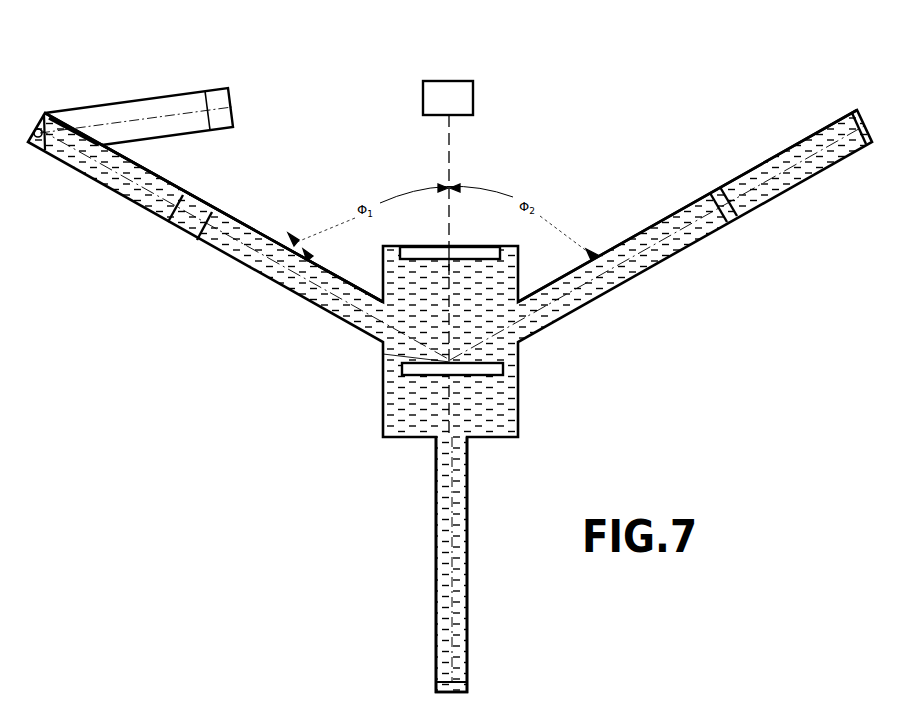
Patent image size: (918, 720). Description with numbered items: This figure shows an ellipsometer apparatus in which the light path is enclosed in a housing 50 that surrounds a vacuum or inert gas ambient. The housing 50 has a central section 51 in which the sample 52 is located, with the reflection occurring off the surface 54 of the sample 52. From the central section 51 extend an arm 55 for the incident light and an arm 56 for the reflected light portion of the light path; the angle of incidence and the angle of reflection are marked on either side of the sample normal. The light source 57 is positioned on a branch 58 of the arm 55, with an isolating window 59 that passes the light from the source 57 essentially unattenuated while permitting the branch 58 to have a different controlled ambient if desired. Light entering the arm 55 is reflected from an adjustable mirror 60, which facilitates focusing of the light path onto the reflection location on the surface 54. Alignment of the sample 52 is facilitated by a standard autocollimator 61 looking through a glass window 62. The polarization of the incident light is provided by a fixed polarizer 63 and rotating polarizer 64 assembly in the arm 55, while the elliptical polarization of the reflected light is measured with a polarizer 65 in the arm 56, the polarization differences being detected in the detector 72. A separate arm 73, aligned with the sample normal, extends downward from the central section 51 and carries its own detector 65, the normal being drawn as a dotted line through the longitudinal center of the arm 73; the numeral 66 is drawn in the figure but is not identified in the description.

The housing 50 is at (327, 204).
The central section 51 is at (374, 335).
The sample 52 is at (493, 377).
The surface 54 is at (383, 354).
The arm 55 is at (168, 183).
The arm 56 is at (689, 204).
The light source 57 is at (222, 98).
The branch 58 is at (146, 96).
The isolating window 59 is at (62, 113).
The adjustable mirror 60 is at (38, 140).
The autocollimator 61 is at (456, 80).
The glass window 62 is at (460, 260).
The fixed polarizer 63 is at (167, 227).
The rotating polarizer 64 is at (200, 242).
The polarizer 65 is at (728, 224).
The optical axis 66 is at (436, 296).
The detector 72 is at (857, 107).
The separate arm 73 is at (406, 521).